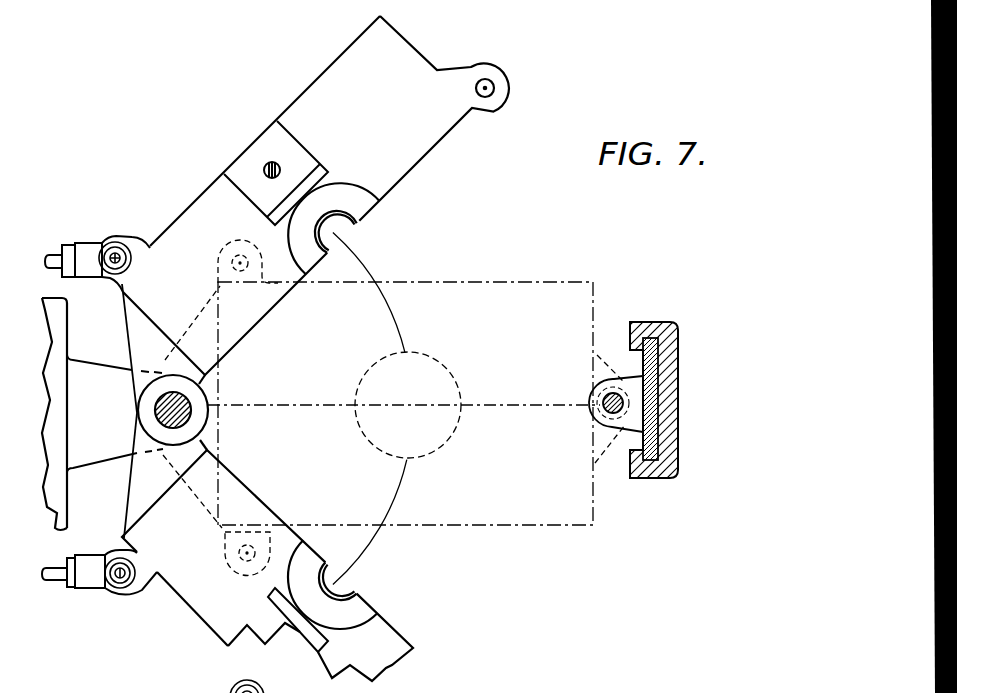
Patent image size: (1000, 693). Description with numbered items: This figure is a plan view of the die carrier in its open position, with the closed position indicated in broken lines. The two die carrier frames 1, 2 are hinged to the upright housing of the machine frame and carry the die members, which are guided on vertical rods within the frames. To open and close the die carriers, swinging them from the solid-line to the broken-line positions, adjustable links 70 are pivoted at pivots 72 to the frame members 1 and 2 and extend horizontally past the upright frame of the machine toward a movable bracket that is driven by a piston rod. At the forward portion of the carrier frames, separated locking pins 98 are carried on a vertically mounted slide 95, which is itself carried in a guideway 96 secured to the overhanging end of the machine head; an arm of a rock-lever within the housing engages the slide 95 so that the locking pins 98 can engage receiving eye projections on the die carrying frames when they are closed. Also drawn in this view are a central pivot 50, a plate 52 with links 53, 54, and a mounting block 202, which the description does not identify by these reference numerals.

The die carrier frame 1 is at (521, 526).
The die carrier frame 2 is at (227, 187).
The pivot shaft 50 is at (160, 413).
The mounting plate 52 is at (58, 342).
The lower link 53 is at (136, 470).
The upper link 54 is at (142, 347).
The adjustable link 70 is at (52, 254).
The pivot 72 is at (133, 588).
The slide 95 is at (653, 423).
The guideway 96 is at (673, 372).
The locking pin 98 is at (603, 413).
The mounting block 202 is at (312, 156).